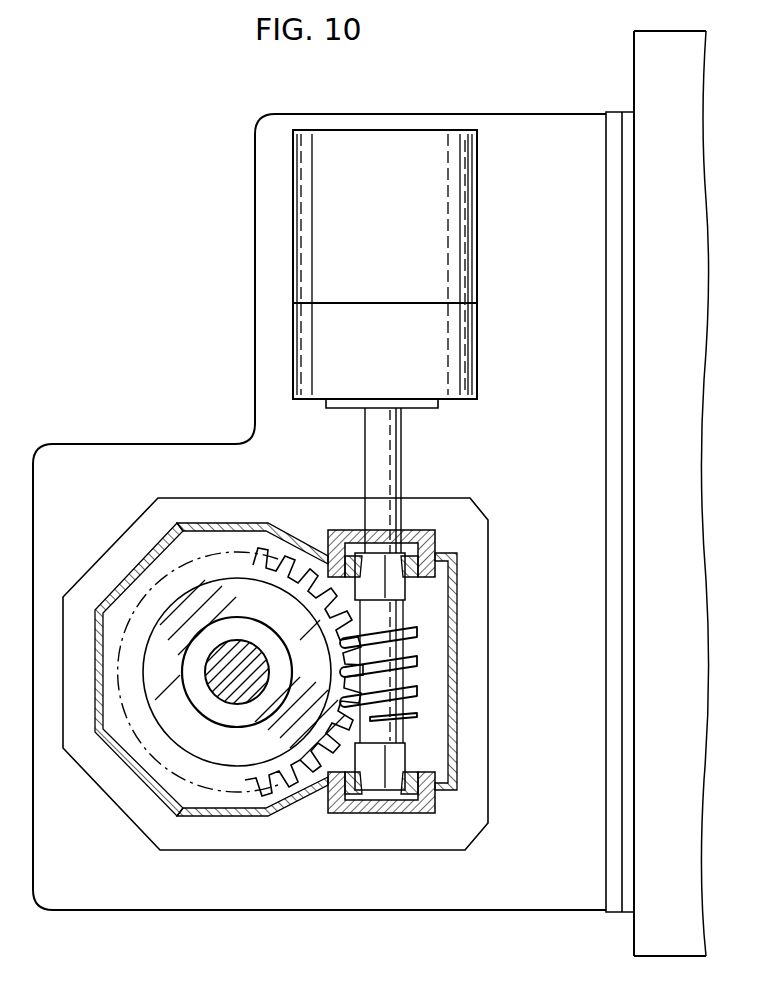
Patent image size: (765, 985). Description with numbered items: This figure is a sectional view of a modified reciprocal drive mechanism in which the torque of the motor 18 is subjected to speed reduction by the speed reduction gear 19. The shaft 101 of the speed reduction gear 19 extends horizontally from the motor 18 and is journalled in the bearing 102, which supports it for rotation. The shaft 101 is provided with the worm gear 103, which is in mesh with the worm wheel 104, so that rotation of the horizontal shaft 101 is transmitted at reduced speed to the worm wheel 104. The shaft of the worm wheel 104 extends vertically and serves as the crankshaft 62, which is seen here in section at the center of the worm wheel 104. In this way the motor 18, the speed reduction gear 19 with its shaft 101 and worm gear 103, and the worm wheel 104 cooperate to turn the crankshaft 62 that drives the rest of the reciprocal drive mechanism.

The motor 18 is at (462, 243).
The shaft 101 is at (396, 455).
The bearing 102 is at (452, 554).
The worm gear 103 is at (419, 665).
The worm wheel 104 is at (345, 623).
The speed reduction gear 19 is at (462, 669).
The crankshaft 62 is at (257, 658).